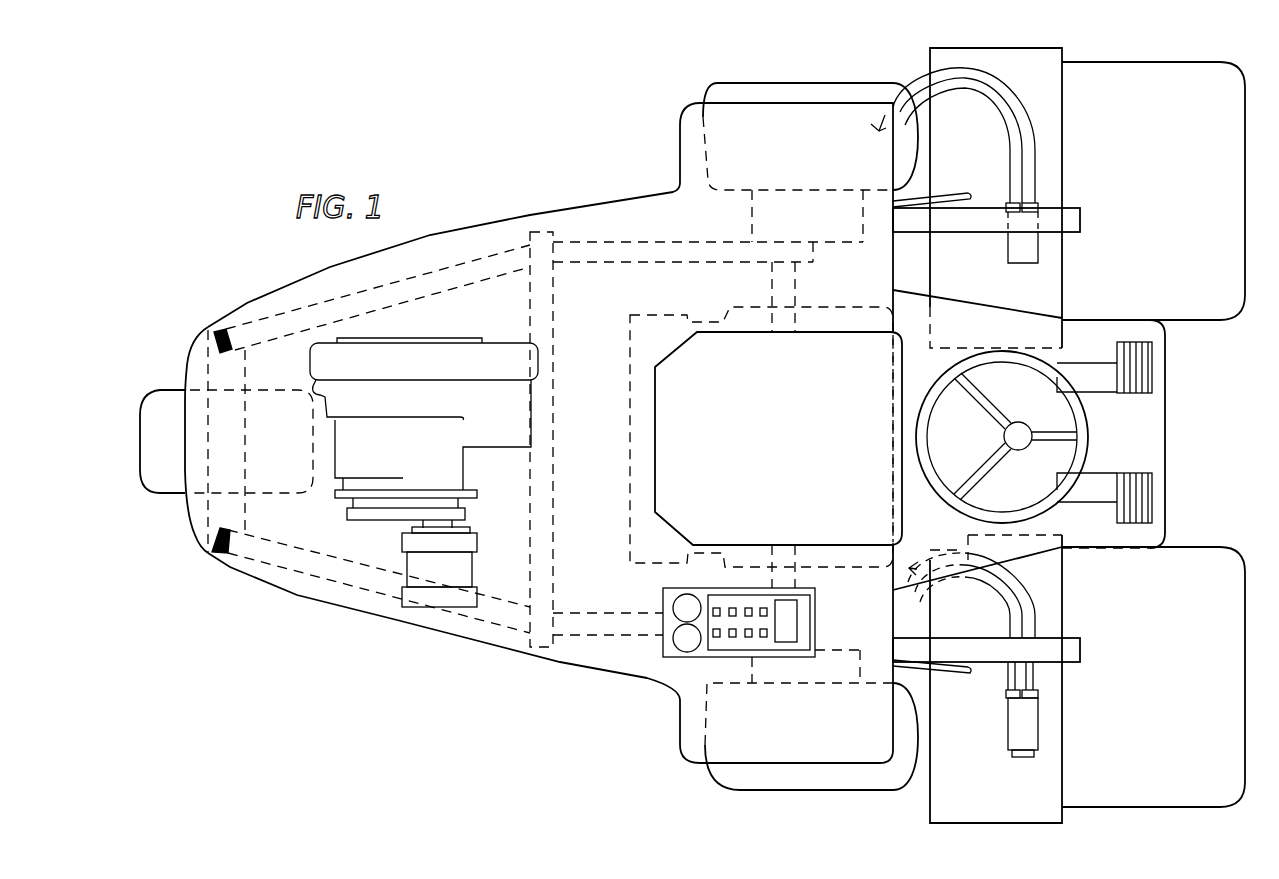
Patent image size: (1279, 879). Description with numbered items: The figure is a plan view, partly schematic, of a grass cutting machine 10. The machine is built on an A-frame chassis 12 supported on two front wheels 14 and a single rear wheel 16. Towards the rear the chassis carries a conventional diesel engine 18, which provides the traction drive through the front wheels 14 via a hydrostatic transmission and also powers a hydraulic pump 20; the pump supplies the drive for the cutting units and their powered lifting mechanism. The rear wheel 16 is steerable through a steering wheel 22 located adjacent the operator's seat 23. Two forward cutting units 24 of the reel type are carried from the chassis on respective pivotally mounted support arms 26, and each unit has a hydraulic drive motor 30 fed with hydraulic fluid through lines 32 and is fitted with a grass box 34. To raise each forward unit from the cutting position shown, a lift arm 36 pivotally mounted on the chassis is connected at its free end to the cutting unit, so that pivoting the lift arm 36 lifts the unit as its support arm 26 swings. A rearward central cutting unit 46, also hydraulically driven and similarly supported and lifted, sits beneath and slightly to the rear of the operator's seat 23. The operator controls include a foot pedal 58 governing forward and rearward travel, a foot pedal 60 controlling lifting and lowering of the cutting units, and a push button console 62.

The grass cutting machine 10 is at (507, 638).
The A-frame chassis 12 is at (643, 265).
The front wheels 14 is at (717, 100).
The rear wheel 16 is at (177, 497).
The diesel engine 18 is at (425, 460).
The hydraulic pump 20 is at (458, 584).
The steering wheel 22 is at (943, 497).
The operator's seat 23 is at (790, 455).
The forward cutting units 24 is at (1002, 164).
The support arms 26 is at (985, 233).
The hydraulic drive motor 30 is at (1025, 263).
The hydraulic lines 32 is at (1000, 87).
The grass box 34 is at (1177, 195).
The lift arm 36 is at (970, 197).
The rearward central cutting unit 46 is at (630, 508).
The foot pedal 58 is at (1152, 497).
The foot pedal 60 is at (1152, 366).
The push button console 62 is at (663, 593).